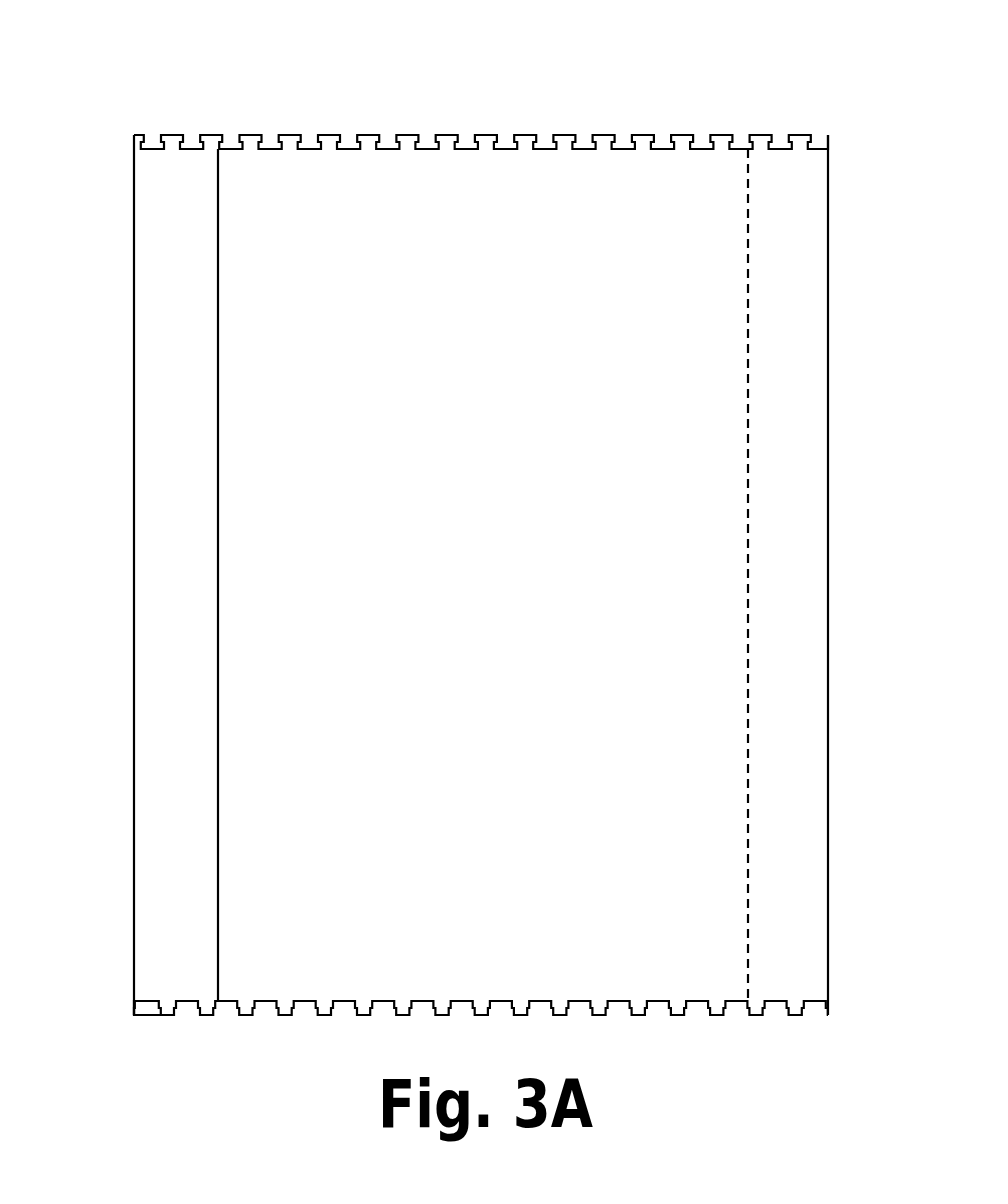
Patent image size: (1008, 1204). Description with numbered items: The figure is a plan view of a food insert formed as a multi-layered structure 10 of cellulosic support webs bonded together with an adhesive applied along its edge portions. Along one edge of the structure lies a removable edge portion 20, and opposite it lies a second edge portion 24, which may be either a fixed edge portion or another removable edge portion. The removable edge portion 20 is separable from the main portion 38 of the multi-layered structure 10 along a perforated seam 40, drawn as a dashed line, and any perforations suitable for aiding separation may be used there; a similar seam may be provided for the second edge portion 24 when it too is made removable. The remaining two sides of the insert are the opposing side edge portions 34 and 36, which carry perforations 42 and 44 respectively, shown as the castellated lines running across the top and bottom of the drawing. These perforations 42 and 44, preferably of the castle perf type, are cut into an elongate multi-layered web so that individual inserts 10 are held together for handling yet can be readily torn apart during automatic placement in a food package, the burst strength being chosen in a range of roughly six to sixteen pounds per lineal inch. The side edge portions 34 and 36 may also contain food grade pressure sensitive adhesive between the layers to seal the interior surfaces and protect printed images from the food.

The multi-layered structure 10 is at (463, 566).
The removable edge portion 20 is at (798, 498).
The second edge portion 24 is at (178, 540).
The side edge portion 34 is at (126, 1015).
The side edge portion 36 is at (123, 137).
The main portion 38 is at (493, 432).
The perforated seam 40 is at (747, 322).
The perforations 42 is at (592, 1030).
The perforations 44 is at (447, 121).